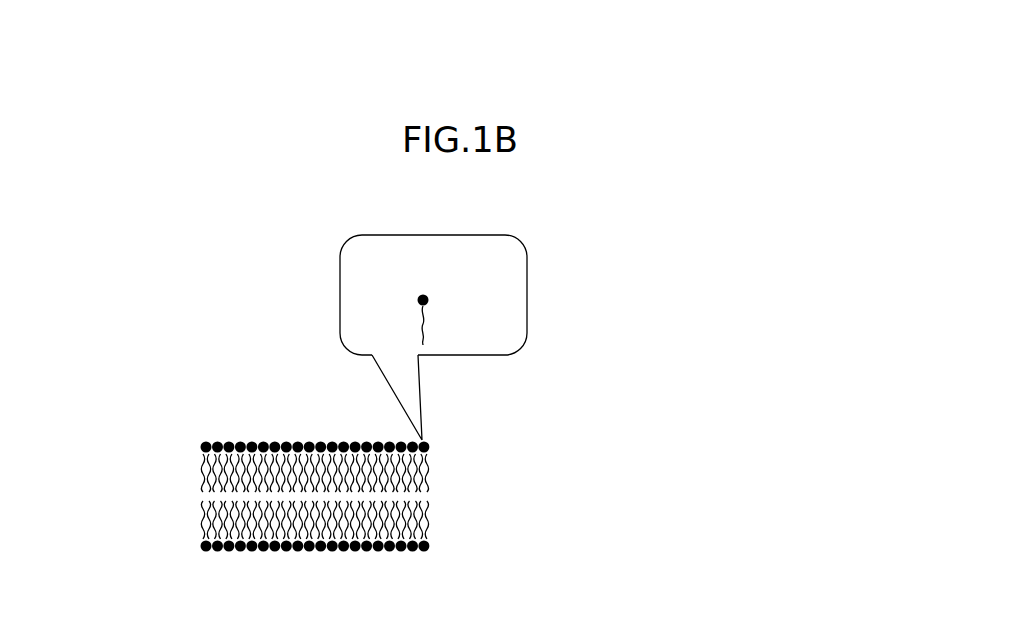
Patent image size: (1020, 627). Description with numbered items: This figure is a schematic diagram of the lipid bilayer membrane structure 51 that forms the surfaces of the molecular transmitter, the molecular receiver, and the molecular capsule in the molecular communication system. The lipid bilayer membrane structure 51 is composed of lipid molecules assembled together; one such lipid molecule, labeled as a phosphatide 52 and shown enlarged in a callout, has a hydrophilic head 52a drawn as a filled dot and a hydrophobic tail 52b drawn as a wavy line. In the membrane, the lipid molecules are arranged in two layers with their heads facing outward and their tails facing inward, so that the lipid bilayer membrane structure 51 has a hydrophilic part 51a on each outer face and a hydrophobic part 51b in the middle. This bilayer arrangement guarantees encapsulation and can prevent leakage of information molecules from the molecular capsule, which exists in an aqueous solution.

The lipid bilayer membrane structure 51 is at (183, 458).
The hydrophilic part 51a is at (466, 489).
The hydrophobic part 51b is at (474, 496).
The phosphatide 52 is at (603, 261).
The hydrophilic head 52a is at (428, 298).
The hydrophobic tail 52b is at (425, 337).